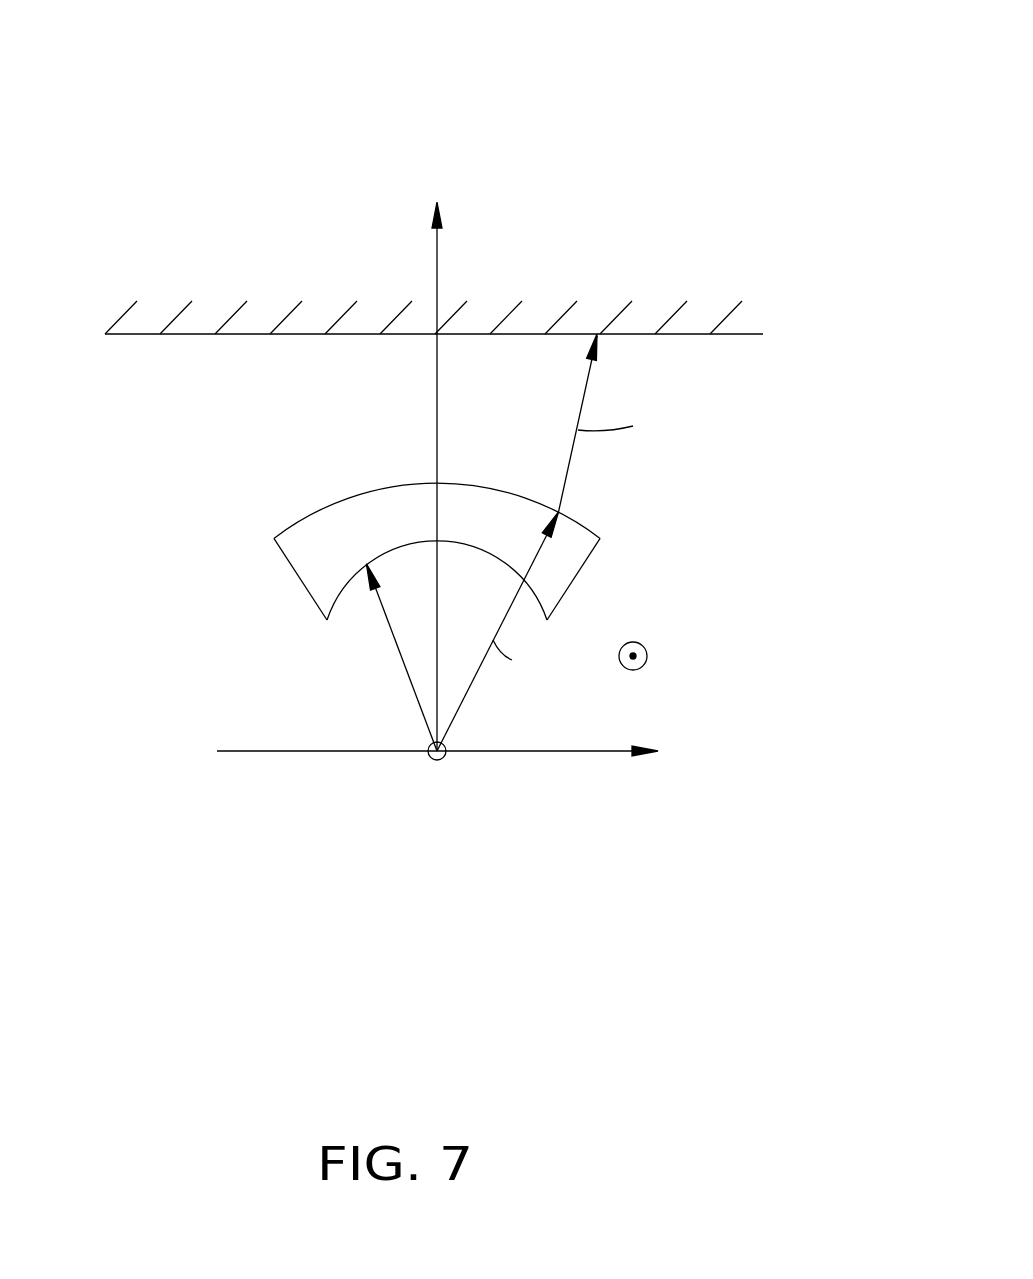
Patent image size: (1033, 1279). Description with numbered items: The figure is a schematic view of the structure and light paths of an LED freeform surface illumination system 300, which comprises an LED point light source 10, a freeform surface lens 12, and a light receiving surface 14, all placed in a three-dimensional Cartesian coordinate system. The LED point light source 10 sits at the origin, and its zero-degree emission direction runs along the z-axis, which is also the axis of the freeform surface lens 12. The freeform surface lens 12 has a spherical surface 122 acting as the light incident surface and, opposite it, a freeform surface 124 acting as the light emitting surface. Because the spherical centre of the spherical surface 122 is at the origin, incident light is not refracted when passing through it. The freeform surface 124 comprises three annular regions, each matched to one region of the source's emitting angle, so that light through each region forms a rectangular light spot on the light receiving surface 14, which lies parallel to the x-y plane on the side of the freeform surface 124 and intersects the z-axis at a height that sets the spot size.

The LED freeform surface illumination system 300 is at (434, 401).
The LED point light source 10 is at (428, 758).
The freeform surface lens 12 is at (366, 568).
The spherical surface 122 is at (341, 597).
The freeform surface 124 is at (293, 520).
The light receiving surface 14 is at (640, 334).